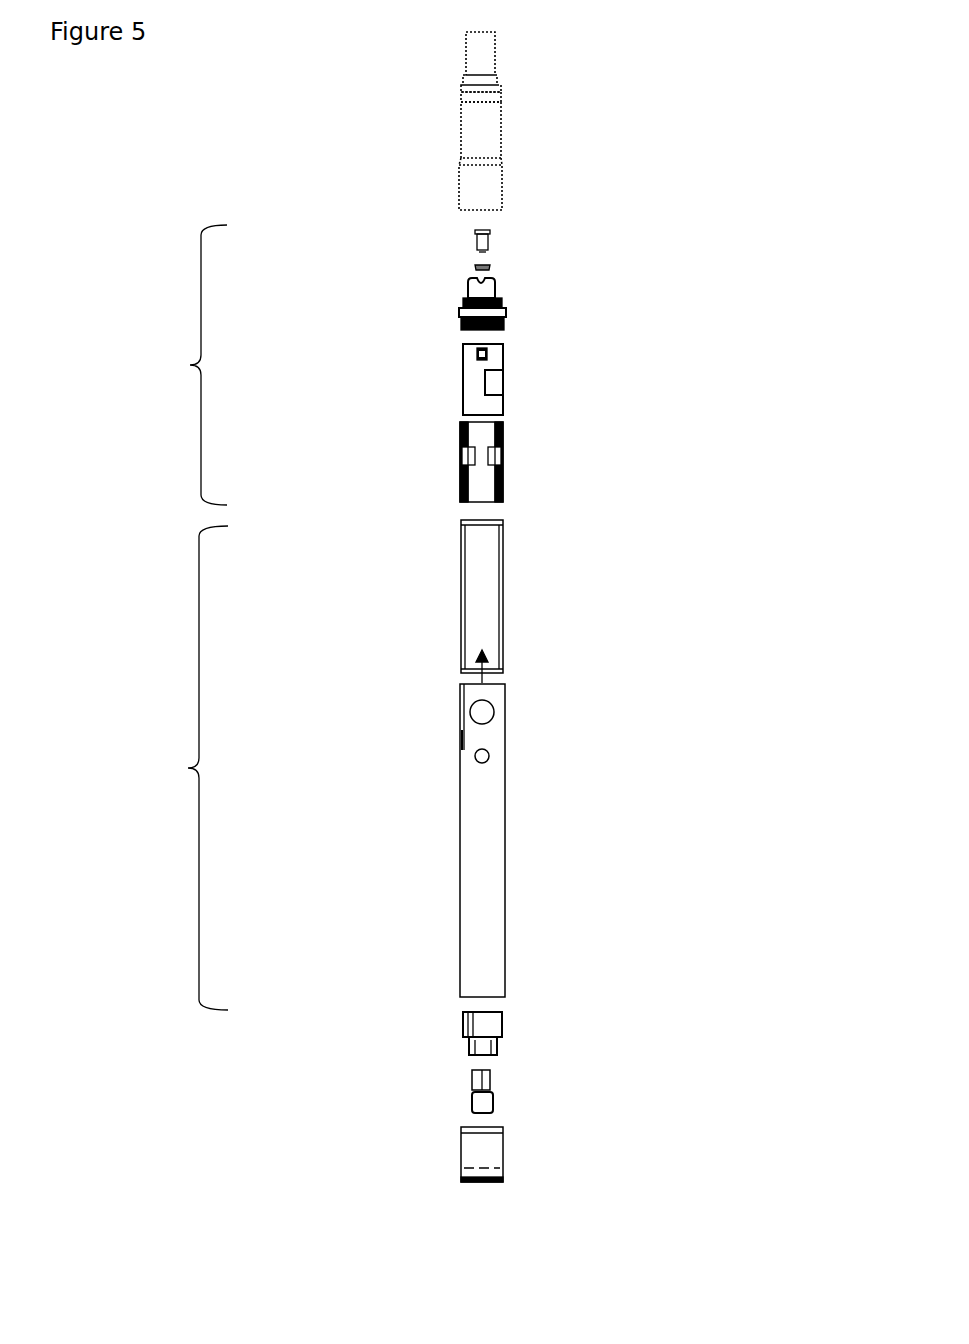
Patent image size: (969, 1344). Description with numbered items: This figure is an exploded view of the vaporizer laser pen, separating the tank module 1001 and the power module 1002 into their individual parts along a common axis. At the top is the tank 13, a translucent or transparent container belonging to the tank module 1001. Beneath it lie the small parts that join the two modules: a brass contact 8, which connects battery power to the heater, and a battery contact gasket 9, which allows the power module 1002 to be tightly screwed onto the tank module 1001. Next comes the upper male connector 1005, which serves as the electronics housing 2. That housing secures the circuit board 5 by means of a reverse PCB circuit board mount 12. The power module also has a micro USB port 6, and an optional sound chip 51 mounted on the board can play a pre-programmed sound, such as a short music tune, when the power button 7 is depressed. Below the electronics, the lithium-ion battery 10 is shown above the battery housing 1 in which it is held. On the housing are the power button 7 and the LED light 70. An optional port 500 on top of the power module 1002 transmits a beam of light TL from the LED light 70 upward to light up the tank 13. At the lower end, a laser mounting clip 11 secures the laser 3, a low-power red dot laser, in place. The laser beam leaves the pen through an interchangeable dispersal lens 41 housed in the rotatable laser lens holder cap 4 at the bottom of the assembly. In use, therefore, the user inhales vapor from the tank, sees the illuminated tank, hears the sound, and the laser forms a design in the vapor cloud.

The tank 13 is at (500, 134).
The contact 8 is at (476, 233).
The battery contact gasket 9 is at (492, 266).
The upper male connector 1005 is at (498, 285).
The electronics housing 2 is at (460, 322).
The circuit board 5 is at (463, 363).
The micro USB port 6 is at (503, 380).
The sound chip 51 is at (463, 388).
The circuit board mount 12 is at (504, 442).
The battery 10 is at (462, 535).
The port 500 is at (482, 682).
The beam of light TL is at (484, 683).
The battery housing 1 is at (458, 707).
The power button 7 is at (494, 712).
The LED light 70 is at (489, 757).
The laser mounting clip 11 is at (463, 1022).
The laser 3 is at (472, 1103).
The laser lens holder cap 4 is at (502, 1148).
The dispersal lens 41 is at (504, 1172).
The tank module 1001 is at (190, 365).
The power module 1002 is at (188, 768).